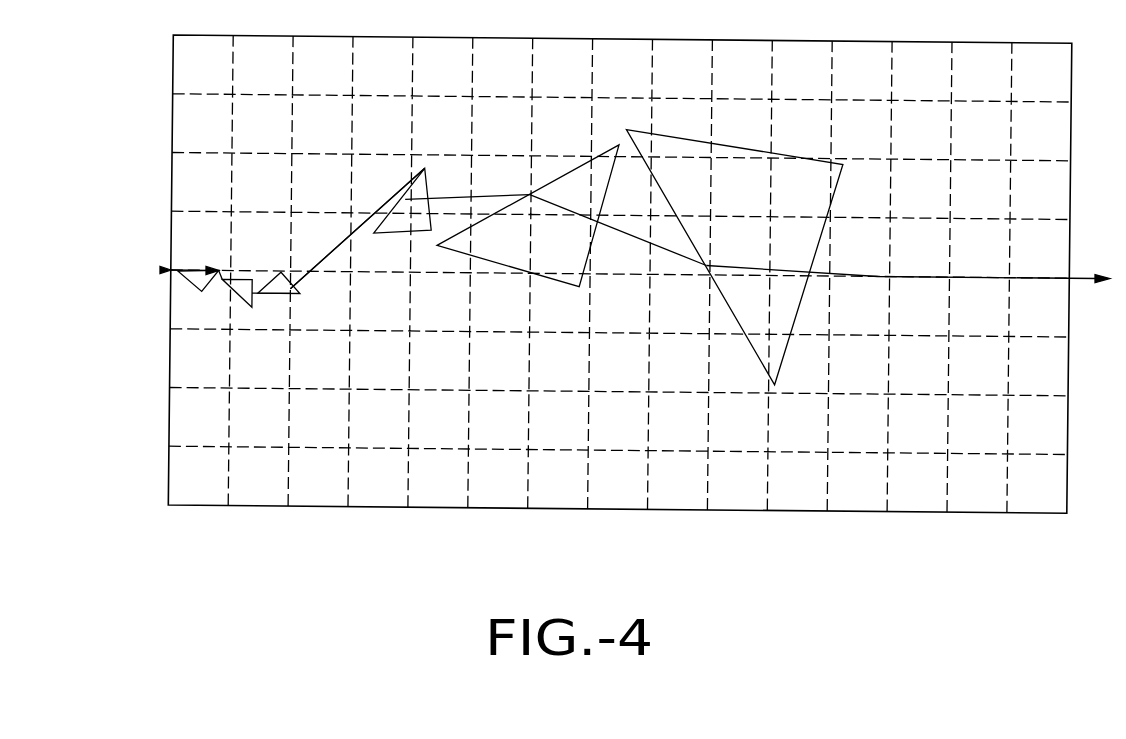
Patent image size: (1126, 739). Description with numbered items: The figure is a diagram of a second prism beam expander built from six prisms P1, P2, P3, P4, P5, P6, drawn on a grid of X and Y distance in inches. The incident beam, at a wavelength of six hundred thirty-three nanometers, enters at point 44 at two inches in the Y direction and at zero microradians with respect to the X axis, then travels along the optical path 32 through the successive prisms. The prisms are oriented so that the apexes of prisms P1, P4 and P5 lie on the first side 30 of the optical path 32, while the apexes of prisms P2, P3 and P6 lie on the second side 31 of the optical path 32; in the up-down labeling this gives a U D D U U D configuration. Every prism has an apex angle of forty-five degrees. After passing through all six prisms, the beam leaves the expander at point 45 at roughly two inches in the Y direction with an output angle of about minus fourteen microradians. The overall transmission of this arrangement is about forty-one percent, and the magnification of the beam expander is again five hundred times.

The point 44 is at (168, 268).
The point 45 is at (1077, 277).
The first side 30 is at (357, 228).
The second side 31 is at (561, 306).
The optical path 32 is at (331, 258).
The prism P1 is at (208, 268).
The prism P2 is at (239, 304).
The prism P3 is at (285, 294).
The prism P4 is at (406, 190).
The prism P5 is at (541, 186).
The prism P6 is at (723, 298).